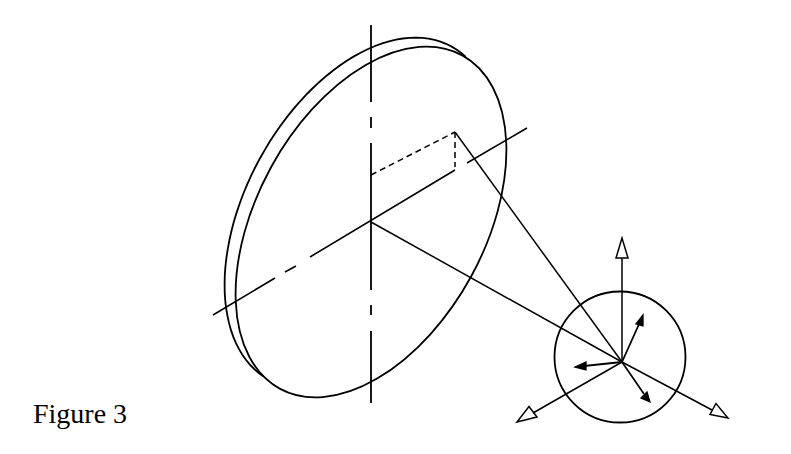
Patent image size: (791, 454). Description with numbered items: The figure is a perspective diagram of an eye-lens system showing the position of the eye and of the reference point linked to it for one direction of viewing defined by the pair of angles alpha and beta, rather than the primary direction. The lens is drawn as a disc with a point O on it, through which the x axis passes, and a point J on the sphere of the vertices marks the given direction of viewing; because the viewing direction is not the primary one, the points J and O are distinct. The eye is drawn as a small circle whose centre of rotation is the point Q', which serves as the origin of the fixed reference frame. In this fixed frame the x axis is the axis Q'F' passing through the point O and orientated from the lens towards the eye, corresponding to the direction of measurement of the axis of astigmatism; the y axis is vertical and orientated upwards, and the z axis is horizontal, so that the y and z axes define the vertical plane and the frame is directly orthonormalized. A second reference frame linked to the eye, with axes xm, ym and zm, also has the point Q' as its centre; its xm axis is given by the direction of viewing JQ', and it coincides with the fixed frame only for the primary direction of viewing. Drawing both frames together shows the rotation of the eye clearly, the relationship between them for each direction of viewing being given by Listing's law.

The point O is at (371, 222).
The point J is at (496, 243).
The centre of rotation of the eye Q' is at (620, 357).
The x axis x is at (680, 398).
The y axis y is at (622, 290).
The z axis z is at (560, 401).
The xm axis xm is at (633, 386).
The ym axis ym is at (645, 338).
The zm axis zm is at (593, 358).